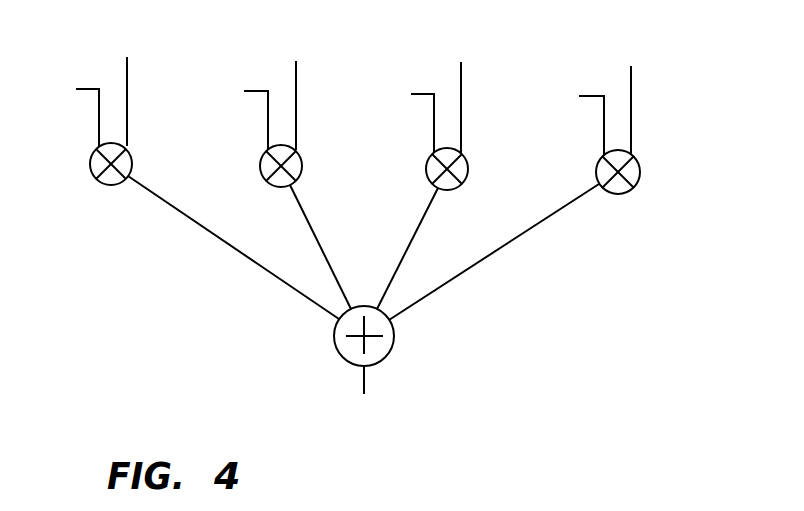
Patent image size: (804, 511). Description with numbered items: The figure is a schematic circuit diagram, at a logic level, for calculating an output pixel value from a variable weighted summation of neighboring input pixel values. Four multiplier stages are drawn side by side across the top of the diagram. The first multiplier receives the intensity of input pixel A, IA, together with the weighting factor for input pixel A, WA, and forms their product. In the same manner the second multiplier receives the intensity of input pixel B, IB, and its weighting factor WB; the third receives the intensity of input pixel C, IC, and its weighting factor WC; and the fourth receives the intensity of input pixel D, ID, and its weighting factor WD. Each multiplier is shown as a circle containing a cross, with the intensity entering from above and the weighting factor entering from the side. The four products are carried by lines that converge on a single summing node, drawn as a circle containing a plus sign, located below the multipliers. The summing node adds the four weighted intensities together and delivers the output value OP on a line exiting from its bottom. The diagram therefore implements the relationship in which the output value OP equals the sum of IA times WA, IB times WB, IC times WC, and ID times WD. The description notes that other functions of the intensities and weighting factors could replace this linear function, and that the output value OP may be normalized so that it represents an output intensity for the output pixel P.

The intensity of input pixel A IA is at (116, 104).
The weighting factor for input pixel A WA is at (67, 112).
The intensity of input pixel B IB is at (285, 105).
The weighting factor for input pixel B WB is at (236, 114).
The intensity of input pixel C IC is at (451, 108).
The weighting factor for input pixel C WC is at (403, 117).
The intensity of input pixel D ID is at (622, 112).
The weighting factor for input pixel D WD is at (572, 120).
The output value OP is at (374, 389).